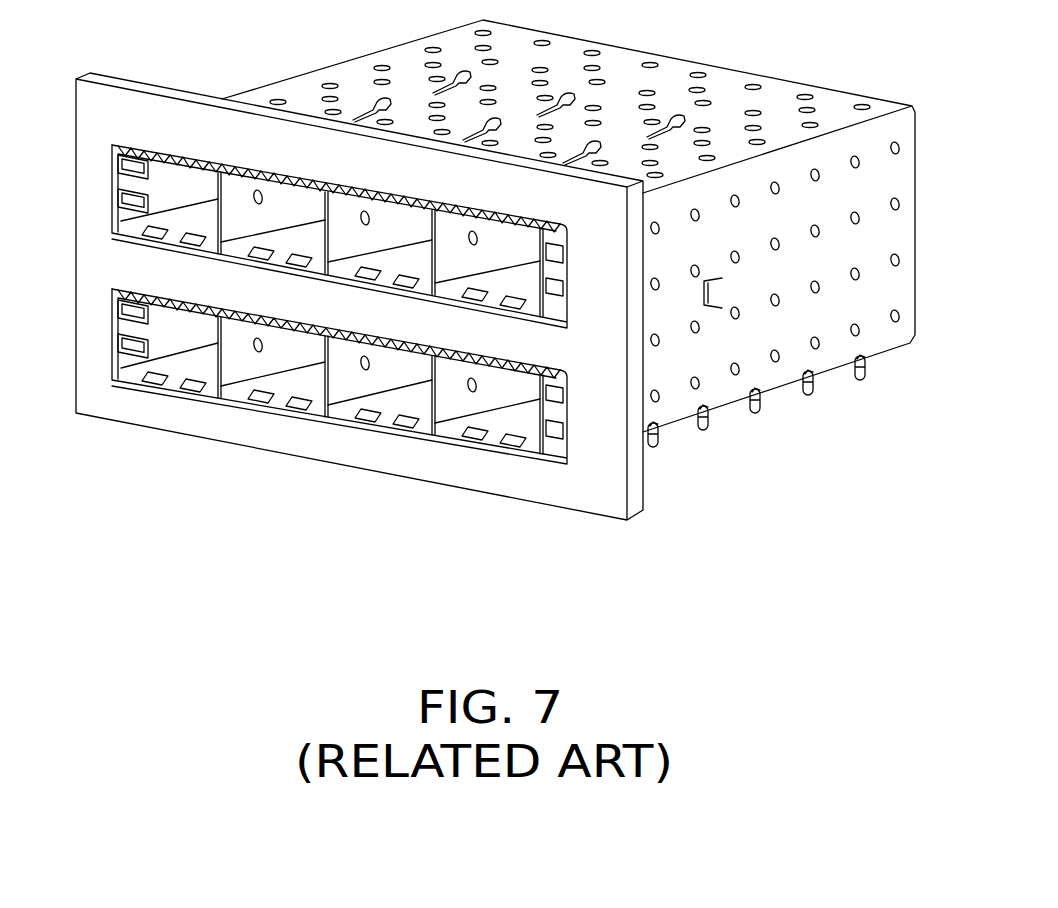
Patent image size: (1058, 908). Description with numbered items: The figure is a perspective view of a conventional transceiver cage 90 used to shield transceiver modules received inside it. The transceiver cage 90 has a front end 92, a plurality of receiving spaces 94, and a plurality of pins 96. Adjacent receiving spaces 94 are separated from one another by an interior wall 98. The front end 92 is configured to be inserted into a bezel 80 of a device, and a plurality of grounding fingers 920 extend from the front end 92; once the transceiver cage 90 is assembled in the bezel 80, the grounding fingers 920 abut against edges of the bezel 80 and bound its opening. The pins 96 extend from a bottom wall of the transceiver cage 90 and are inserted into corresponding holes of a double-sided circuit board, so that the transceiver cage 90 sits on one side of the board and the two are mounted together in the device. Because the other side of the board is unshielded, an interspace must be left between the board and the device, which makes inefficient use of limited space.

The bezel 80 is at (145, 412).
The transceiver cage 90 is at (466, 251).
The front end 92 is at (197, 150).
The grounding fingers 920 is at (134, 141).
The receiving spaces 94 is at (280, 224).
The pins 96 is at (808, 398).
The interior wall 98 is at (217, 194).